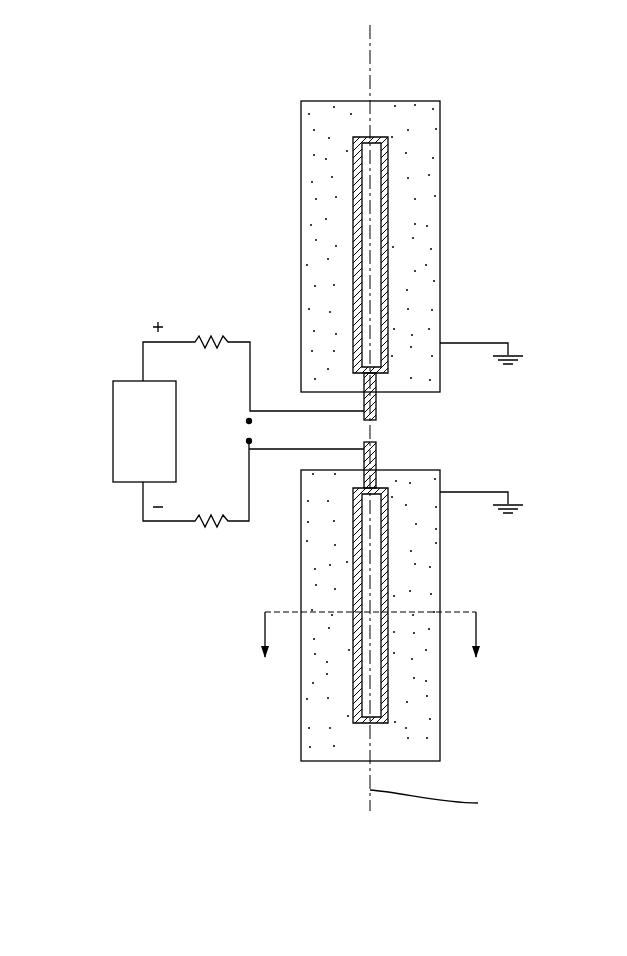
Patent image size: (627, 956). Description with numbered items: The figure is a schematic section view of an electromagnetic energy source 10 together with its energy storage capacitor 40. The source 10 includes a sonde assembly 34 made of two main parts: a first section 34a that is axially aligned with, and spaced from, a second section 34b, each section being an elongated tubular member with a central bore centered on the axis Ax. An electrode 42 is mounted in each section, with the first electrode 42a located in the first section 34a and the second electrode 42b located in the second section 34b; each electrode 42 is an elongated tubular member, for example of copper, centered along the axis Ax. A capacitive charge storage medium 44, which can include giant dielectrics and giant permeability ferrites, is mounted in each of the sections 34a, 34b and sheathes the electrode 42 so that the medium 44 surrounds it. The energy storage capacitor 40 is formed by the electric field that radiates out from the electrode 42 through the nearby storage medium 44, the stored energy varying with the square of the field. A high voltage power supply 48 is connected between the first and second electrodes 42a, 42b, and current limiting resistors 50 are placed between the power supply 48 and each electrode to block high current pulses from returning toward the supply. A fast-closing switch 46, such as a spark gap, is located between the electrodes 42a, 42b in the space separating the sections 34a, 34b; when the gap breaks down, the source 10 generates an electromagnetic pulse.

The electromagnetic energy source 10 is at (201, 211).
The sonde assembly 34 is at (314, 69).
The first section 34a is at (512, 657).
The second section 34b is at (474, 204).
The energy storage capacitor 40 is at (261, 593).
The electrode 42 is at (383, 135).
The first electrode 42a is at (387, 698).
The second electrode 42b is at (386, 163).
The capacitive charge storage medium 44 is at (325, 707).
The fast-closing switch 46 is at (250, 433).
The high voltage power supply 48 is at (113, 405).
The current limiting resistors 50 is at (205, 530).